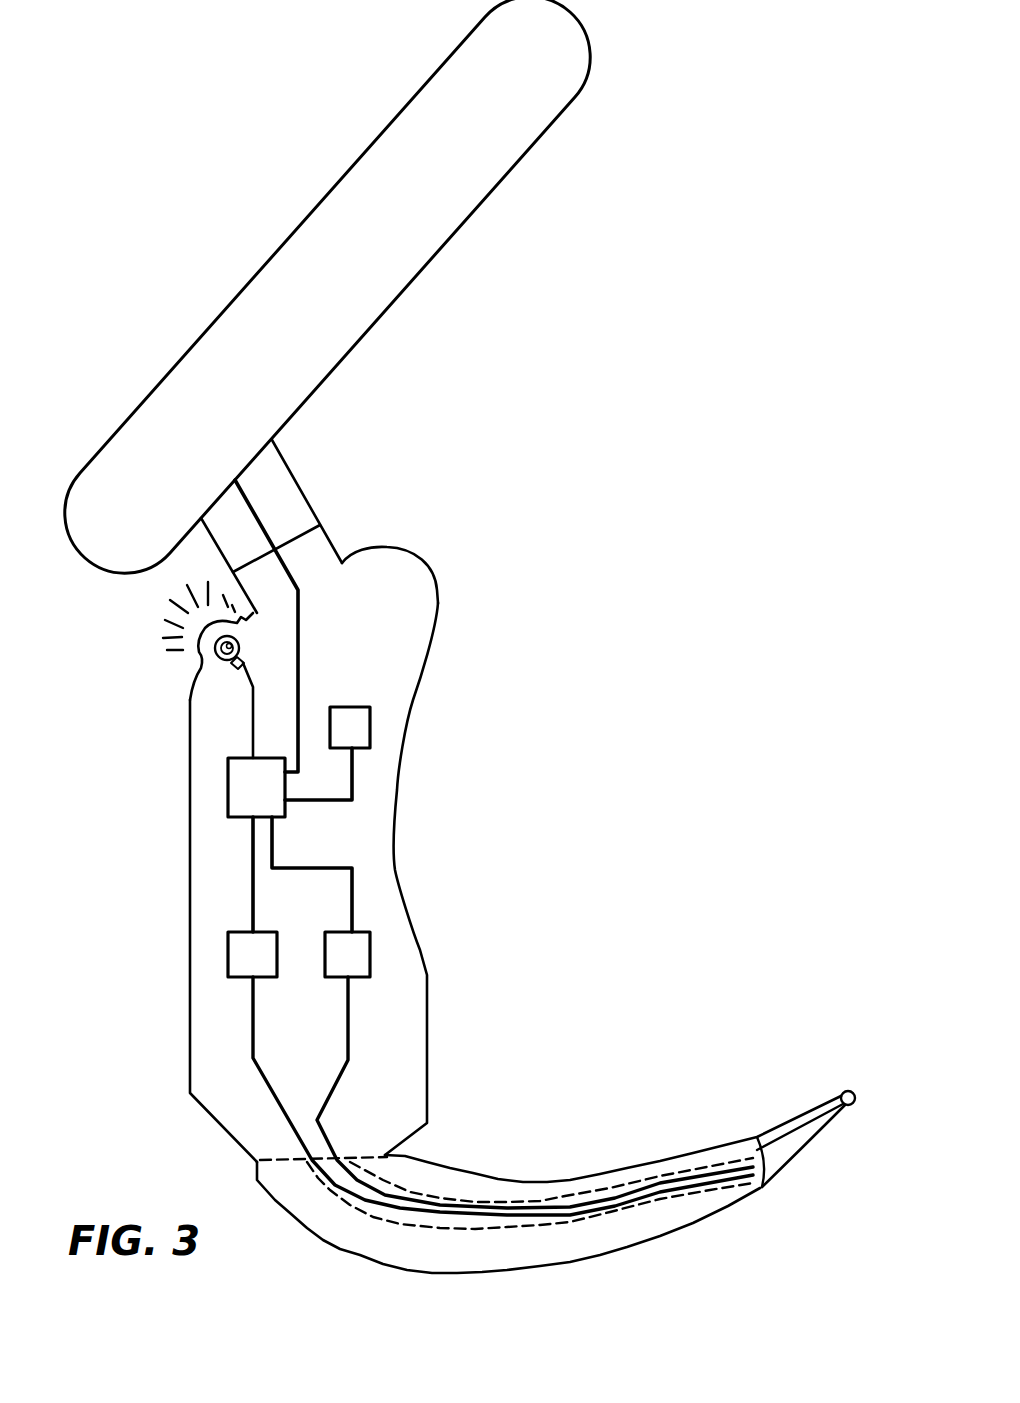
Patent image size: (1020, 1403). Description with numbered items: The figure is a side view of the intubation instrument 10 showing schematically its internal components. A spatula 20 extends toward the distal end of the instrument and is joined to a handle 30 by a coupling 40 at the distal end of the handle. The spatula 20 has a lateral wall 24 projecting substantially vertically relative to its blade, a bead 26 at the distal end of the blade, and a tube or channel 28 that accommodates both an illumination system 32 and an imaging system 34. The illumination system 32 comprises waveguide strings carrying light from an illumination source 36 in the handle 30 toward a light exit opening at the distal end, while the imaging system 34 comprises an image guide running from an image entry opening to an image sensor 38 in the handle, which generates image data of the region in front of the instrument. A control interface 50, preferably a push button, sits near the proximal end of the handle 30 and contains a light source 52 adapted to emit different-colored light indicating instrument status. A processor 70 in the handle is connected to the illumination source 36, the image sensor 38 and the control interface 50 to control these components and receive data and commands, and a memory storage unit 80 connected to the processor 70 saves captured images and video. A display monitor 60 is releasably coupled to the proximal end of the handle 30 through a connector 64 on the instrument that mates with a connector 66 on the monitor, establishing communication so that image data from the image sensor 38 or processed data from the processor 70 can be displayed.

The intubation instrument 10 is at (238, 227).
The spatula 20 is at (688, 1219).
The lateral wall 24 is at (350, 1225).
The bead 26 is at (848, 1090).
The channel 28 is at (525, 1227).
The handle 30 is at (463, 593).
The illumination system 32 is at (348, 1052).
The imaging system 34 is at (280, 1110).
The illumination source 36 is at (370, 952).
The image sensor 38 is at (228, 960).
The coupling 40 is at (203, 1108).
The control interface 50 is at (192, 660).
The light source 52 is at (227, 662).
The display monitor 60 is at (485, 200).
The connector 64 is at (330, 540).
The connector 66 is at (297, 478).
The processor 70 is at (228, 785).
The memory storage unit 80 is at (370, 728).